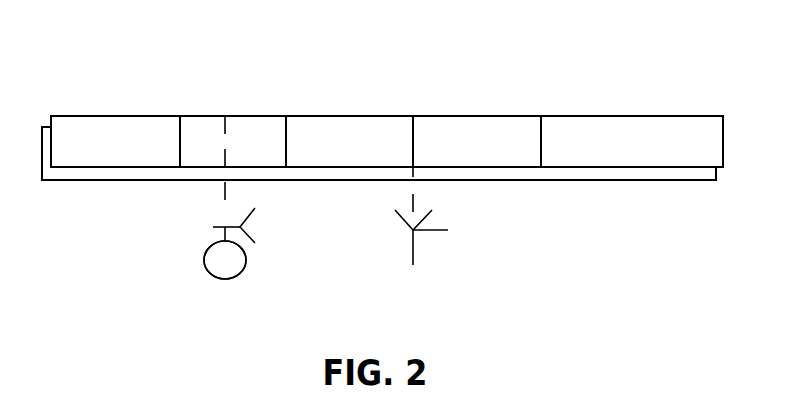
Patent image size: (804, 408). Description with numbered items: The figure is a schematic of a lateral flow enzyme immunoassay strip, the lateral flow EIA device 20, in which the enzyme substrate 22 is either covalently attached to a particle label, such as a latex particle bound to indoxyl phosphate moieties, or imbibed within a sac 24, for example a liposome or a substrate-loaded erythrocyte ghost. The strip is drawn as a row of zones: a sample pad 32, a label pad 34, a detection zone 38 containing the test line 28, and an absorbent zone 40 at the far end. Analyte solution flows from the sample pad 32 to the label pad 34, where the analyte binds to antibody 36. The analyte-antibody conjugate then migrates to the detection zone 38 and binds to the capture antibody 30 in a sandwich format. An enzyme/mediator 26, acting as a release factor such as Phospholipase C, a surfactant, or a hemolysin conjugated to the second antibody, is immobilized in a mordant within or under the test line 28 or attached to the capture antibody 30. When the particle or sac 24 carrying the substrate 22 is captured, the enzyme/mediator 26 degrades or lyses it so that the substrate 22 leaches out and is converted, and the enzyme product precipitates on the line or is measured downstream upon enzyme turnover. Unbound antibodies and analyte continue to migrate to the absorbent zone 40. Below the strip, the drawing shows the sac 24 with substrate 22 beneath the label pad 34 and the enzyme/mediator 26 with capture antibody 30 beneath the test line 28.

The lateral flow EIA device 20 is at (382, 109).
The substrate 22 is at (234, 274).
The sac 24 is at (203, 263).
The enzyme/mediator 26 is at (437, 225).
The test line 28 is at (416, 139).
The capture antibody 30 is at (418, 252).
The sample pad 32 is at (108, 116).
The label pad 34 is at (238, 116).
The antibody 36 is at (251, 230).
The detection zone 38 is at (320, 116).
The absorbent zone 40 is at (630, 116).